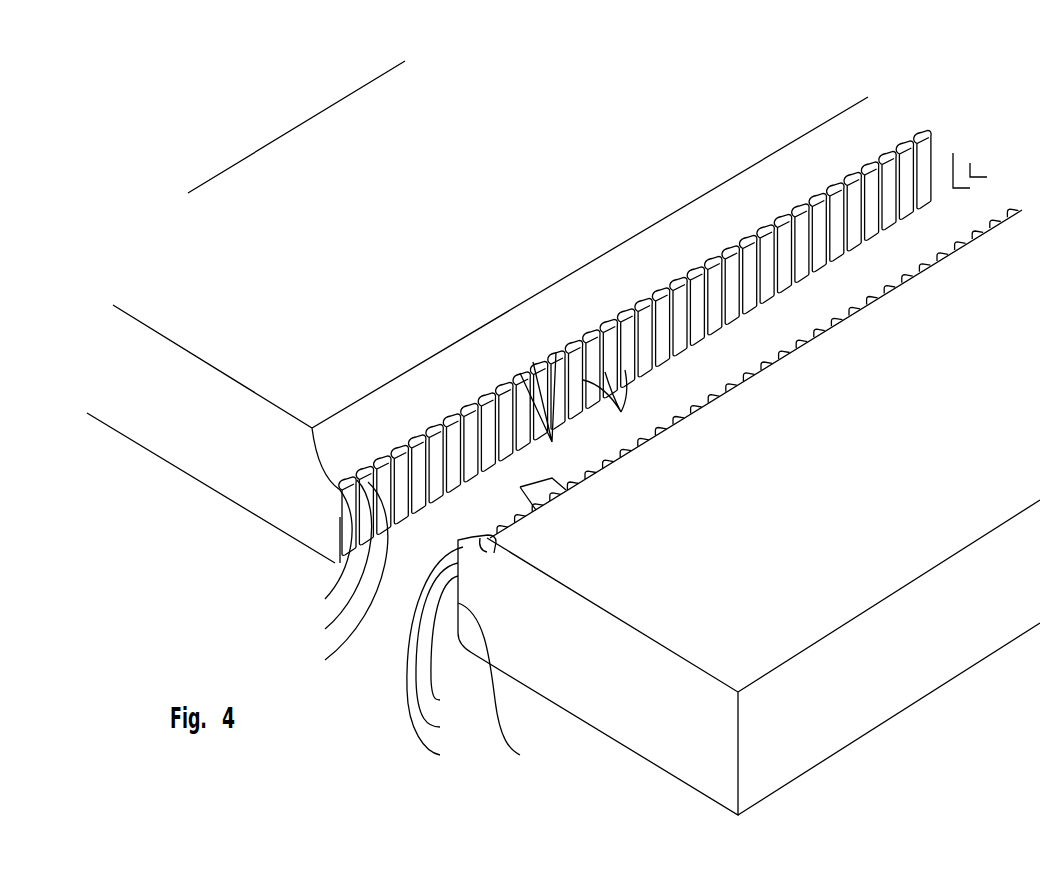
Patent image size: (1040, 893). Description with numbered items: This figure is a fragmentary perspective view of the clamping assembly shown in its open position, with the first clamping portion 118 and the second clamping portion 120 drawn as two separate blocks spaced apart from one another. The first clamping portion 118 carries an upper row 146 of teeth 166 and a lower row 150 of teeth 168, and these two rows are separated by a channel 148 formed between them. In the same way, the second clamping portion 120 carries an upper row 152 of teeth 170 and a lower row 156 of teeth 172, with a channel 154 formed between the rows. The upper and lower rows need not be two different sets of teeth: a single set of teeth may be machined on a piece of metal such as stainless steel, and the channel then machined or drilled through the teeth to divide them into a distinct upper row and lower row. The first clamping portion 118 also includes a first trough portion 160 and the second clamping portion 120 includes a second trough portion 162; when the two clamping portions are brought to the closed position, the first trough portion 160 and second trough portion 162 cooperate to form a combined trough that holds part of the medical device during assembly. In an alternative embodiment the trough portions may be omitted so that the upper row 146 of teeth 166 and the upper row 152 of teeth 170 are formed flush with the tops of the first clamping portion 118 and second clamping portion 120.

The first clamping portion 118 is at (747, 561).
The second clamping portion 120 is at (347, 285).
The upper row 146 is at (440, 755).
The channel 148 is at (440, 727).
The lower row 150 is at (440, 700).
The upper row 152 is at (325, 660).
The channel 154 is at (325, 629).
The lower row 156 is at (325, 599).
The first trough portion 160 is at (472, 537).
The second trough portion 162 is at (464, 362).
The teeth 166 is at (520, 487).
The teeth 168 is at (520, 755).
The teeth 170 is at (553, 444).
The teeth 172 is at (622, 412).